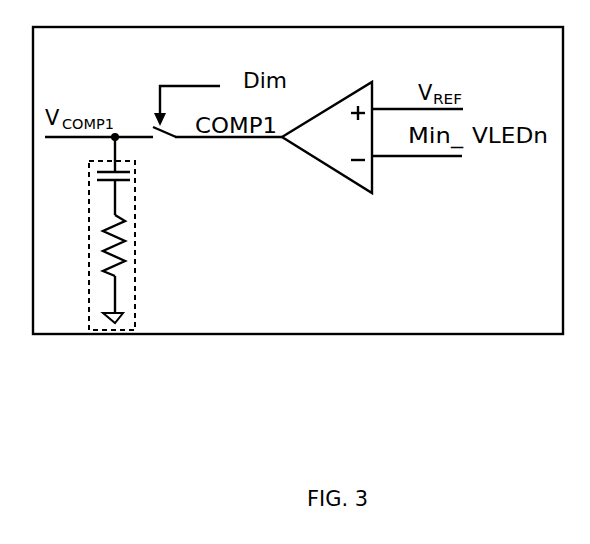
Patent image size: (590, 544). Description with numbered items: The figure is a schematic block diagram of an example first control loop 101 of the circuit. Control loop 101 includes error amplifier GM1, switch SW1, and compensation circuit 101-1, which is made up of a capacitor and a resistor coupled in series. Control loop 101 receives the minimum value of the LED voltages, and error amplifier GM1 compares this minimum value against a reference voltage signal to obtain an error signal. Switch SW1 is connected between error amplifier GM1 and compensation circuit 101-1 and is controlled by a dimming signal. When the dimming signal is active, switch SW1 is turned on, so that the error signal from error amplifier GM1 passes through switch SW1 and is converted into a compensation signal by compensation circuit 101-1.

The control loop 101 is at (532, 317).
The compensation circuit 101-1 is at (223, 283).
The switch SW1 is at (210, 147).
The error amplifier GM1 is at (327, 137).